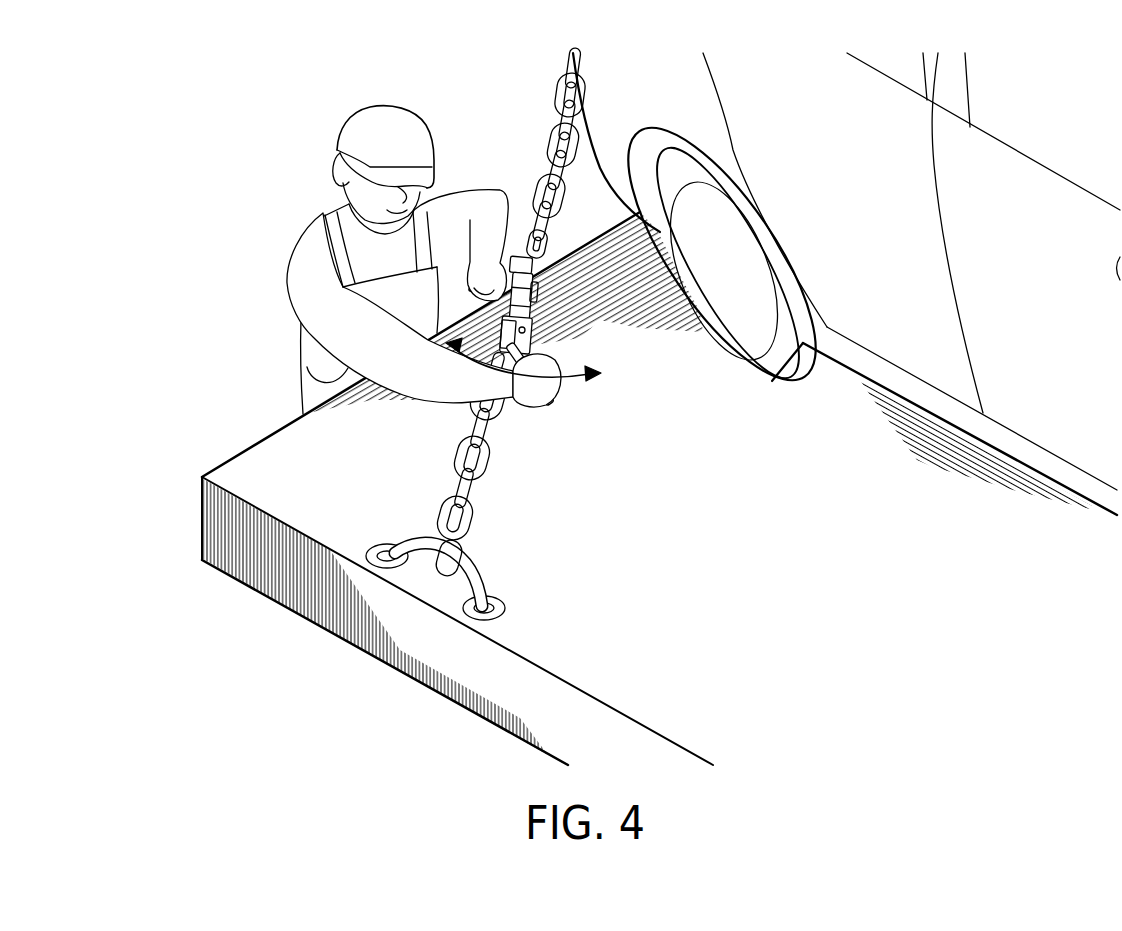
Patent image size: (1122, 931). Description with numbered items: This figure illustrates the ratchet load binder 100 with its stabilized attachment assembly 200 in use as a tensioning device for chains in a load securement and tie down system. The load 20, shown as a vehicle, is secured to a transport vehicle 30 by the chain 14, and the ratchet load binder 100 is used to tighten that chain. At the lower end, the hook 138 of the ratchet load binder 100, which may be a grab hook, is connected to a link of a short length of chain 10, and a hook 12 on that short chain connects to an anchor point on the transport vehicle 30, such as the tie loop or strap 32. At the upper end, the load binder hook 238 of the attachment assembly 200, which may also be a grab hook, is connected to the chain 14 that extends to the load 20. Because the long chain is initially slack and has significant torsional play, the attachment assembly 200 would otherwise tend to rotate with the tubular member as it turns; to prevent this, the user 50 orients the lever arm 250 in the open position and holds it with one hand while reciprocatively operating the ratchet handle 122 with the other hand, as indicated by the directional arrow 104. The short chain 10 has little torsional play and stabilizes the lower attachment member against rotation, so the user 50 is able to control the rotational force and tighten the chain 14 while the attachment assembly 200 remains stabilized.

The chain 10 is at (470, 498).
The hook 12 is at (466, 550).
The chain 14 is at (561, 126).
The load 20 is at (869, 202).
The transport vehicle 30 is at (253, 473).
The tie loop or strap 32 is at (401, 538).
The user 50 is at (300, 240).
The ratchet load binder 100 is at (568, 305).
The directional arrow 104 is at (569, 380).
The ratchet handle 122 is at (544, 405).
The hook 138 is at (458, 449).
The stabilized attachment assembly 200 is at (515, 218).
The load binder hook 238 is at (558, 206).
The lever arm 250 is at (537, 288).